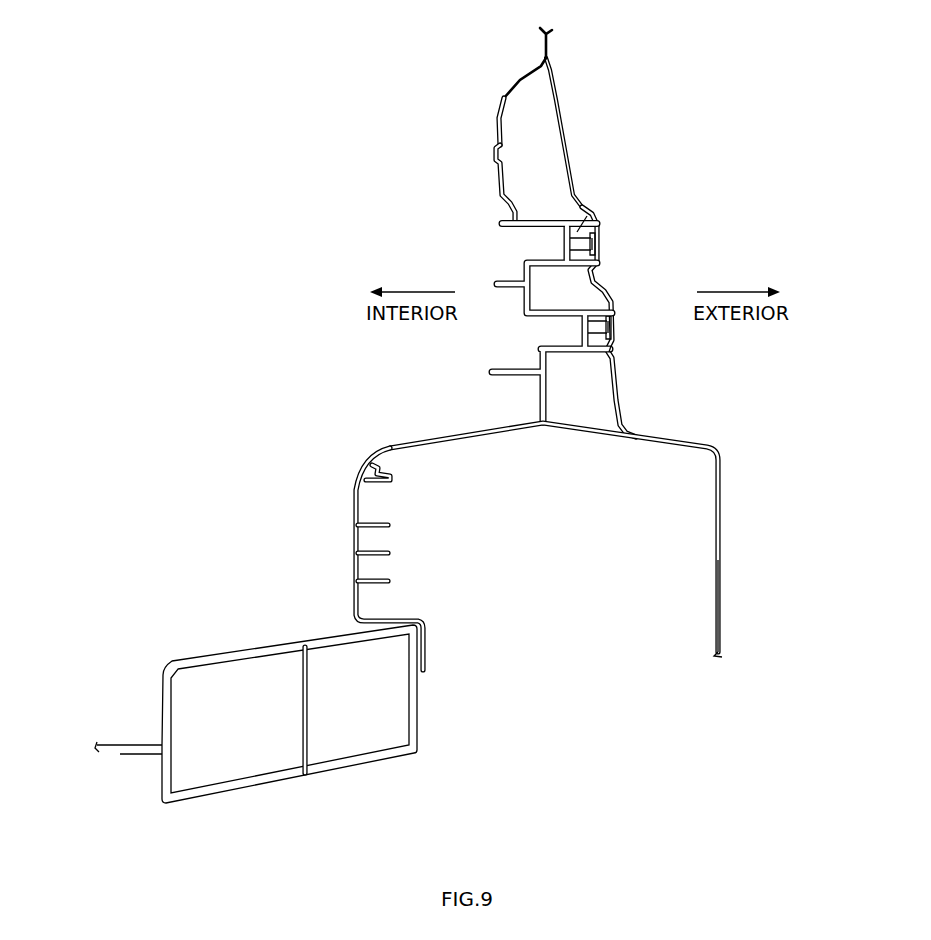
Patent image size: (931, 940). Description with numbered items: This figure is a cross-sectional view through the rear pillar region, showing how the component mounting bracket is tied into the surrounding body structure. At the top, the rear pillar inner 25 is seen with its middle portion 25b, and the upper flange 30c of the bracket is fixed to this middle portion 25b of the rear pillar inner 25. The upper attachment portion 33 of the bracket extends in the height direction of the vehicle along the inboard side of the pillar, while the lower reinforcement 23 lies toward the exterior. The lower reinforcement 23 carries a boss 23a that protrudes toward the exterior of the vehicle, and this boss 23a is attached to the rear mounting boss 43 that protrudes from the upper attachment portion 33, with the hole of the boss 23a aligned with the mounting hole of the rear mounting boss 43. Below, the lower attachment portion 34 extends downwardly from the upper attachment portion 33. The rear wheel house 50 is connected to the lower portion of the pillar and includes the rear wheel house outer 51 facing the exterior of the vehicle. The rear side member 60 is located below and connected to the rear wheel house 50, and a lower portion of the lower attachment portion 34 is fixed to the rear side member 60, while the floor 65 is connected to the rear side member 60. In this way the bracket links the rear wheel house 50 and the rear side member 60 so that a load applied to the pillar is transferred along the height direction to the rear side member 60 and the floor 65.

The lower reinforcement 23 is at (564, 109).
The boss 23a is at (595, 216).
The rear pillar inner 25 is at (530, 47).
The middle portion 25b is at (500, 97).
The upper flange 30c is at (498, 124).
The upper attachment portion 33 is at (491, 198).
The lower attachment portion 34 is at (351, 532).
The rear mounting boss 43 is at (577, 232).
The rear wheel house 50 is at (730, 448).
The rear wheel house outer 51 is at (722, 511).
The rear side member 60 is at (215, 801).
The floor 65 is at (130, 742).